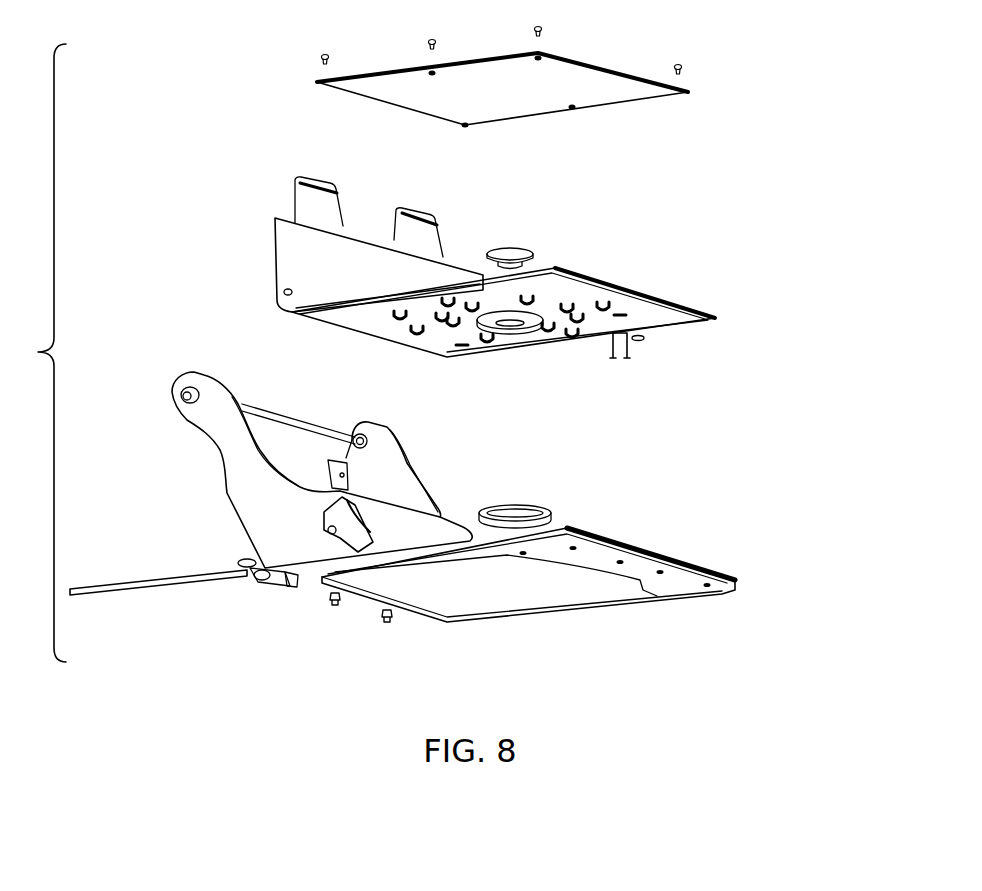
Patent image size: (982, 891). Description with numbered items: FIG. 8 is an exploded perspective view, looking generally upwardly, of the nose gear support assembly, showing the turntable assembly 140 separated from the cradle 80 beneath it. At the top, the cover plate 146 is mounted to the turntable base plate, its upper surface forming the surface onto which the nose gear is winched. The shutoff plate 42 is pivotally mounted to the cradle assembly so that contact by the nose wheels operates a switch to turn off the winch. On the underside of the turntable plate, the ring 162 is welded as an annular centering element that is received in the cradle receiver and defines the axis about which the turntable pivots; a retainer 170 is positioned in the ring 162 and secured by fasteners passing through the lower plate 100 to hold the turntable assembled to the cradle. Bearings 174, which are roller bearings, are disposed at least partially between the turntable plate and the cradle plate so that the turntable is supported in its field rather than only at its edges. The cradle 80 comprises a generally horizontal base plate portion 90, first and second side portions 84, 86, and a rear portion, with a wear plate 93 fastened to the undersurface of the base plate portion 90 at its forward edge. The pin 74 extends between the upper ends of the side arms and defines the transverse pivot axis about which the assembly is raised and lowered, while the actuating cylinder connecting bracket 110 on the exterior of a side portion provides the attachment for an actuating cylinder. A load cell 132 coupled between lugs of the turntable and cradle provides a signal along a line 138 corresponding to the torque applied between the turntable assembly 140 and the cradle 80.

The cover plate 146 is at (622, 70).
The turntable assembly 140 is at (755, 312).
The shutoff plate 42 is at (307, 203).
The ring 162 is at (502, 308).
The retainer 170 is at (525, 252).
The bearings 174 is at (605, 300).
The cradle 80 is at (772, 583).
The wear plate 93 is at (680, 597).
The lower plate 100 is at (547, 598).
The base plate portion 90 is at (422, 612).
The second side portion 86 is at (243, 492).
The pin 74 is at (265, 415).
The first side portion 84 is at (380, 443).
The actuating cylinder connecting bracket 110 is at (327, 527).
The load cell 132 is at (265, 588).
The line 138 is at (150, 587).